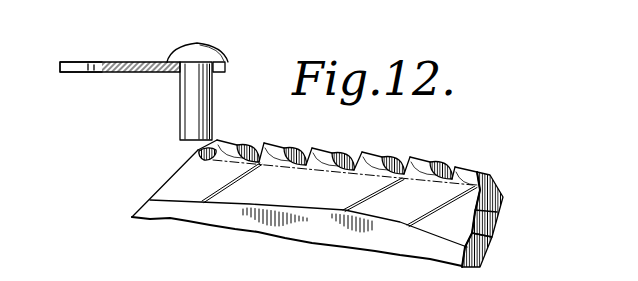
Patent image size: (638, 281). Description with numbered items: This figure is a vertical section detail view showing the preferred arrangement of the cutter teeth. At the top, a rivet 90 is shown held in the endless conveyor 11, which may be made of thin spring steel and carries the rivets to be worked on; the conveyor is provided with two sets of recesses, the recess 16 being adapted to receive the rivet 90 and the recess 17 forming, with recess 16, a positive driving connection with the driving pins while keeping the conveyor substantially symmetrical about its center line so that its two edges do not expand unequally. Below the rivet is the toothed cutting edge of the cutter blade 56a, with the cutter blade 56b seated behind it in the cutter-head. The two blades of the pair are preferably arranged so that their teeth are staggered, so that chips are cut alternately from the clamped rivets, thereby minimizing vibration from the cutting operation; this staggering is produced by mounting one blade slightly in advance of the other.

The endless conveyor 11 is at (127, 73).
The conveyor recess 17 is at (76, 72).
The conveyor recess 16 is at (226, 66).
The clamped rivet 90 is at (214, 106).
The cutter blade 56a is at (493, 218).
The cutter blade 56b is at (470, 240).